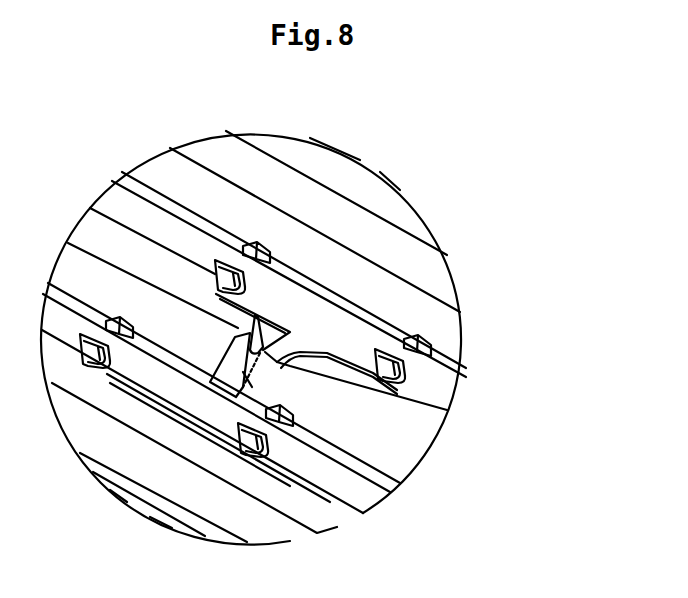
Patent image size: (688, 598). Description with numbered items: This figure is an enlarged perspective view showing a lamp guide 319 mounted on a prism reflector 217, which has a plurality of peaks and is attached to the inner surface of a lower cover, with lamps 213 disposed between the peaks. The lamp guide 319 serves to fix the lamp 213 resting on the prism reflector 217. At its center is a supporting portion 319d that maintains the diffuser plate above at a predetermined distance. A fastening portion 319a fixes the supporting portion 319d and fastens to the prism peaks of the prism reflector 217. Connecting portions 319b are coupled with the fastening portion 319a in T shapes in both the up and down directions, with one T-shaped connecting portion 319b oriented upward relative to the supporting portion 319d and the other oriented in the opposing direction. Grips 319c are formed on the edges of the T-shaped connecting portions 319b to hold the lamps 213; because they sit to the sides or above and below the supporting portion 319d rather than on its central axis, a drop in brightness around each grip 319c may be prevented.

The lamp 213 is at (367, 238).
The prism reflector 217 is at (85, 228).
The lamp guide 319 is at (351, 374).
The fastening portion 319a is at (300, 428).
The connecting portion 319b is at (443, 362).
The grip 319c is at (417, 340).
The supporting portion 319d is at (268, 360).